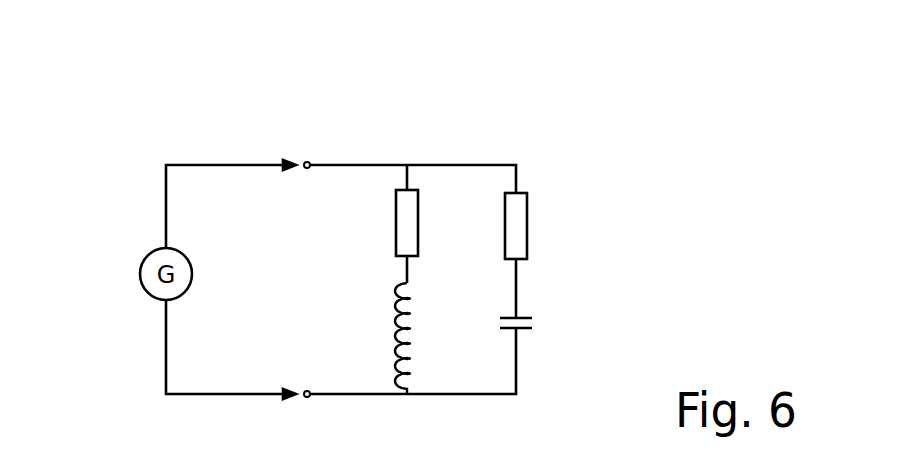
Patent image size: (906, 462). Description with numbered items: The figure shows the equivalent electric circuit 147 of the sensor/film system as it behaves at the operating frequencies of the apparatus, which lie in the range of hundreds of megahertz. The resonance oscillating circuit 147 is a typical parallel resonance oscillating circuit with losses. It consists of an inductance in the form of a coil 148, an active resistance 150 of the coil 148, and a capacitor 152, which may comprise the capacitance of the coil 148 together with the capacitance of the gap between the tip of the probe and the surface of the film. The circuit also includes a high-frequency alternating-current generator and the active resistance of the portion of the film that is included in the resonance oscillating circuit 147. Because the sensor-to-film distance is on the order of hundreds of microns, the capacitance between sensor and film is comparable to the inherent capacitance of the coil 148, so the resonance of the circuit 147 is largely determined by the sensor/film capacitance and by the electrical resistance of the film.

The equivalent electric circuit 147 is at (543, 164).
The active resistance 150 is at (423, 217).
The coil 148 is at (412, 333).
The capacitor 152 is at (530, 313).